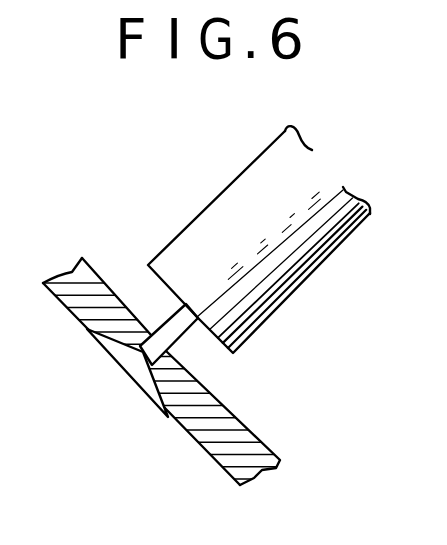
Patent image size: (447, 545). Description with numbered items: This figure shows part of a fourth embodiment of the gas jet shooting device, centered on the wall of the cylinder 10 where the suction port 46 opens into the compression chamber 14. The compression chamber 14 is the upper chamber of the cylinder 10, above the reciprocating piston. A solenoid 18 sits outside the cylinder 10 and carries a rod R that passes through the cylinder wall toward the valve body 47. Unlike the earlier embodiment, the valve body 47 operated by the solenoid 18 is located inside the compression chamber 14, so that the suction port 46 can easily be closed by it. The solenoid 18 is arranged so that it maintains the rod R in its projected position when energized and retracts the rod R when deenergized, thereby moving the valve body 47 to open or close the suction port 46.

The cylinder 10 is at (246, 424).
The compression chamber 14 is at (74, 392).
The solenoid 18 is at (285, 304).
The suction port 46 is at (174, 349).
The valve body 47 is at (131, 384).
The rod R is at (172, 326).